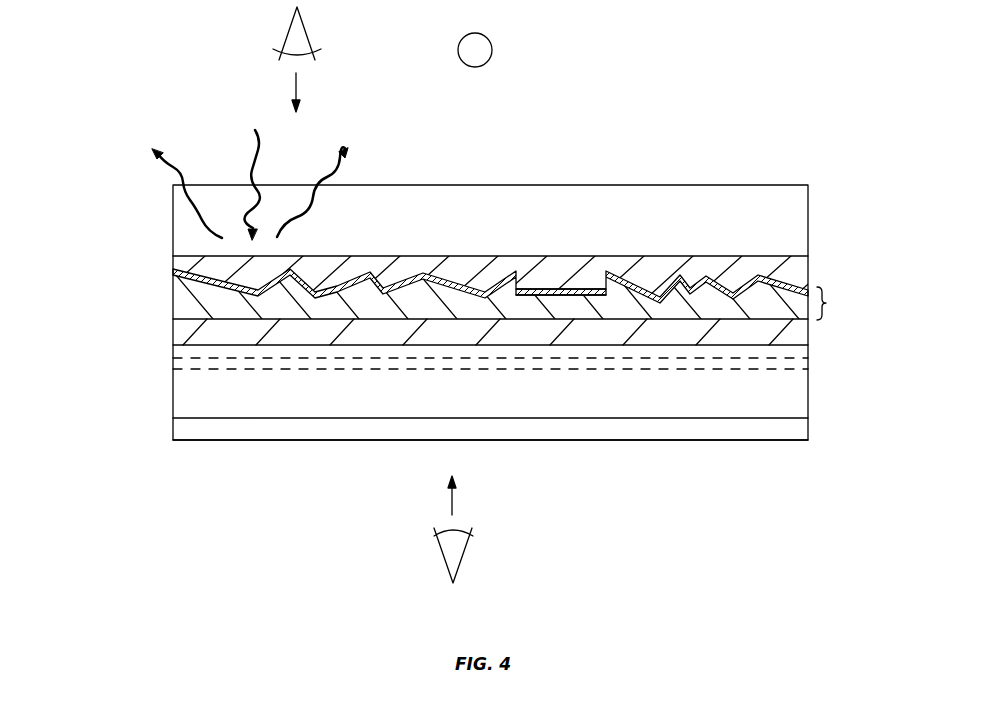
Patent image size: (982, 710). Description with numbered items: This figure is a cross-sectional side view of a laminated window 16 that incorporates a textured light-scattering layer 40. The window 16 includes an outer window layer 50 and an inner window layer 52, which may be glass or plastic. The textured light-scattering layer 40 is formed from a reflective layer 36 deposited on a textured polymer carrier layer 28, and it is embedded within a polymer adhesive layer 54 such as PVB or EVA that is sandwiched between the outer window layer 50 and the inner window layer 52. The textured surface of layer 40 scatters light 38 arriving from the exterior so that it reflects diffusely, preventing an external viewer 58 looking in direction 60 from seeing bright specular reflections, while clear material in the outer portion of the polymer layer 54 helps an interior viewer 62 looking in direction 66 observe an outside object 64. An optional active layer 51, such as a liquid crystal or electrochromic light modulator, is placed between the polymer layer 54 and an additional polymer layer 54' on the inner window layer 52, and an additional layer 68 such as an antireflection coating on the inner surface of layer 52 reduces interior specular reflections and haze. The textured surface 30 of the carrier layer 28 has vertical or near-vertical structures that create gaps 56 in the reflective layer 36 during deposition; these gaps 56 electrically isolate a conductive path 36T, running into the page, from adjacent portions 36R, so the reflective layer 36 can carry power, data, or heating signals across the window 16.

The window 16 is at (91, 227).
The textured polymer carrier layer 28 is at (175, 295).
The textured surface 30 is at (636, 300).
The reflective layer 36 is at (428, 277).
The adjacent portions of reflective layer 36R is at (333, 299).
The conductive path 36T is at (578, 299).
The light 38 is at (183, 200).
The textured light-scattering layer 40 is at (834, 303).
The outer window layer 50 is at (798, 220).
The active layer 51 is at (175, 352).
The inner window layer 52 is at (800, 383).
The polymer layer 54 is at (476, 293).
The additional polymer layer 54' is at (458, 359).
The gaps 56 is at (599, 274).
The external viewer 58 is at (308, 28).
The direction 60 is at (298, 83).
The viewer 62 is at (467, 557).
The object 64 is at (492, 48).
The direction 66 is at (455, 496).
The additional layer 68 is at (800, 427).